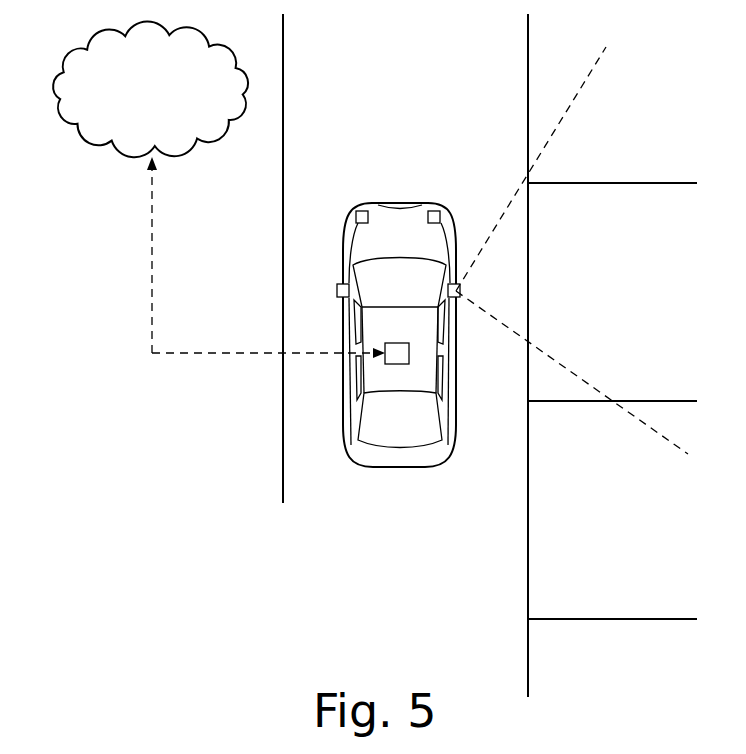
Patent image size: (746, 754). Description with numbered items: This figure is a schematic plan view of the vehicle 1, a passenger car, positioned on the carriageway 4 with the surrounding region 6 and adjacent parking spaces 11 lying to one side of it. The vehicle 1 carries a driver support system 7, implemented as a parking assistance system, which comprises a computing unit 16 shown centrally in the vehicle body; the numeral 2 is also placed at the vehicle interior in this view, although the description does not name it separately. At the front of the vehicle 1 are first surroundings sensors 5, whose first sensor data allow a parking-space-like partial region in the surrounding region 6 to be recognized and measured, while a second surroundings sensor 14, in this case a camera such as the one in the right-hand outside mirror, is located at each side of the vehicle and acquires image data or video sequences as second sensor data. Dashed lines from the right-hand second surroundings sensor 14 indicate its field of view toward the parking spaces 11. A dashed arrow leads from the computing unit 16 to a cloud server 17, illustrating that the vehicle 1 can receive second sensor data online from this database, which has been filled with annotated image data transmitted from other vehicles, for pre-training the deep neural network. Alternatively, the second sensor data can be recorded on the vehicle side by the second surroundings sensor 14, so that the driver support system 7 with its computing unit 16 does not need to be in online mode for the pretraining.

The vehicle 1 is at (395, 467).
The driver assistance system 2 is at (420, 336).
The carriageway 4 is at (406, 65).
The first surroundings sensor 5 is at (360, 207).
The surrounding region 6 is at (631, 113).
The driver support system 7 is at (353, 412).
The parking spaces 11 is at (569, 433).
The second surroundings sensor 14 is at (338, 291).
The computing unit 16 is at (398, 353).
The cloud server 17 is at (108, 135).